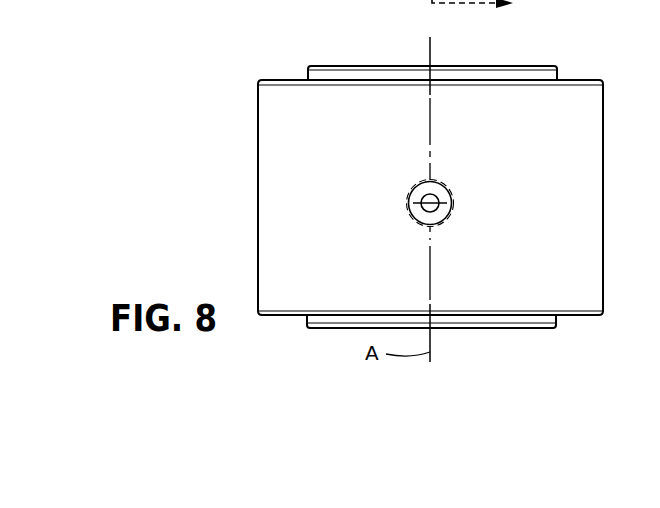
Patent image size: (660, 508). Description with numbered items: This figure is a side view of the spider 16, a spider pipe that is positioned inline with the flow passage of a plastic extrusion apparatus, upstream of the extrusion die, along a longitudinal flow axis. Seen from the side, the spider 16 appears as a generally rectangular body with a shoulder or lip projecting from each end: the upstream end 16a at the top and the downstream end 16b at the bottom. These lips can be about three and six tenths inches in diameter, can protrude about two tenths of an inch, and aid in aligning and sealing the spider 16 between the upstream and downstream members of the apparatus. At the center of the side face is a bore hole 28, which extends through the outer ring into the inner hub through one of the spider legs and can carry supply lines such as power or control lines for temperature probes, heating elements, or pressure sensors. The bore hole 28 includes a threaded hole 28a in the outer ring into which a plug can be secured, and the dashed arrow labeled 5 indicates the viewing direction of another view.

The spider 16 is at (272, 146).
The upstream end 16a is at (515, 67).
The downstream end 16b is at (505, 330).
The bore hole 28 is at (433, 196).
The threaded hole 28a is at (453, 201).
The view direction indicator to FIG. 5 is at (482, 9).